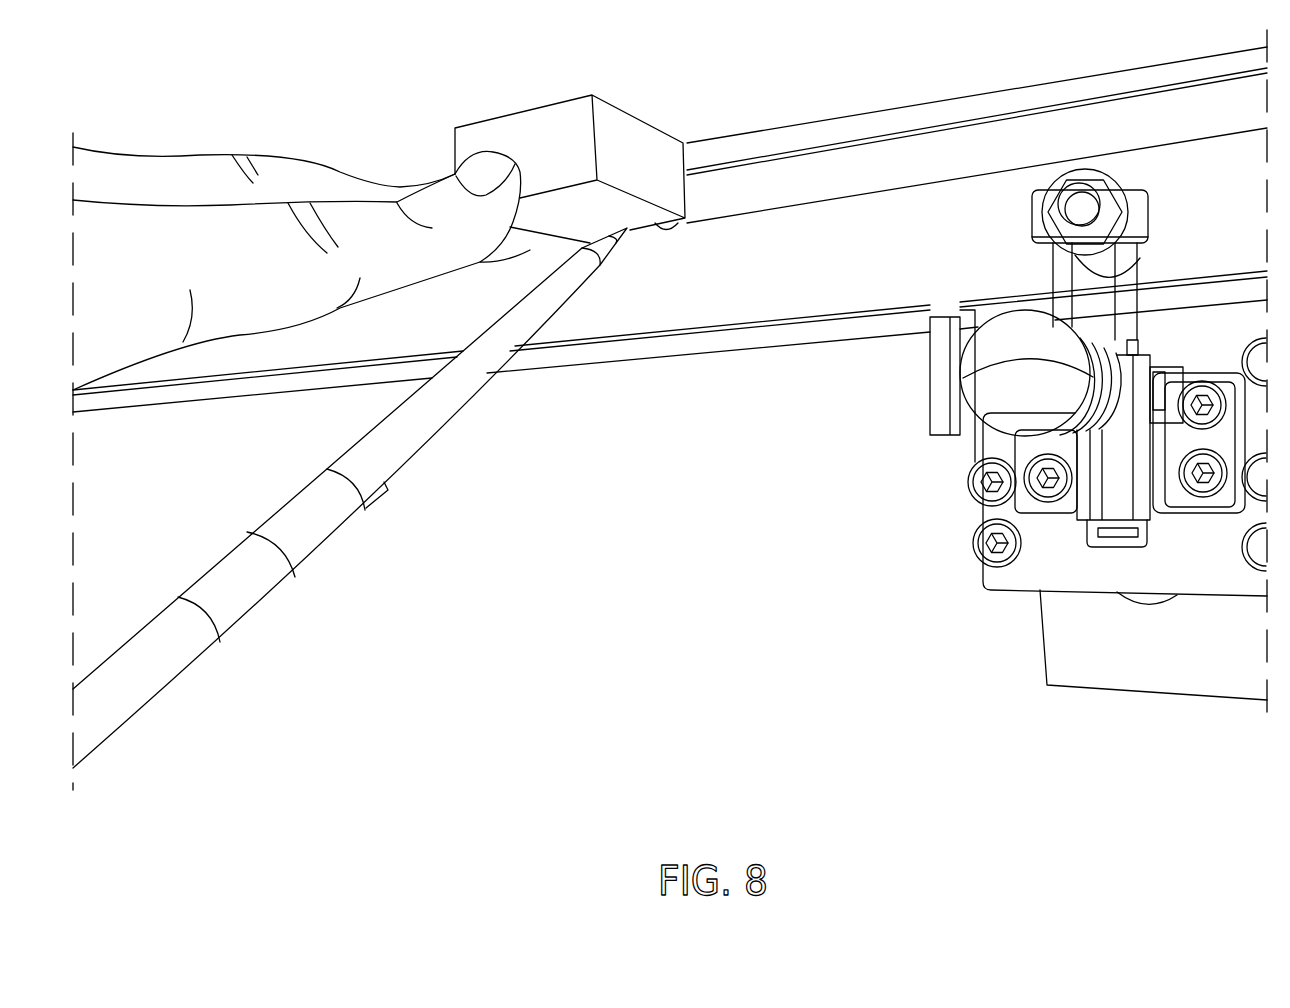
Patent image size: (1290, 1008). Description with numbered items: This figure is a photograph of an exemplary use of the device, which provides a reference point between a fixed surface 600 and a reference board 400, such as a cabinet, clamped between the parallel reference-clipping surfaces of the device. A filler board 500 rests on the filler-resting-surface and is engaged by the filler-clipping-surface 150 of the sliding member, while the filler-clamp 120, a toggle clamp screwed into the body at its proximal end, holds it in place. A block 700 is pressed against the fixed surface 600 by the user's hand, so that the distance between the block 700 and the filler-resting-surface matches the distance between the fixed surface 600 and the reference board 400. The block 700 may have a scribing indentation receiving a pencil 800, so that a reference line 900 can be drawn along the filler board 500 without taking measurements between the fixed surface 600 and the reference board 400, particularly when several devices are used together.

The fixed surface 600 is at (433, 52).
The block 700 is at (618, 147).
The filler board 500 is at (817, 187).
The reference line 900 is at (968, 175).
The reference board 400 is at (725, 330).
The pencil 800 is at (305, 529).
The filler-clamp 120 is at (1030, 445).
The filler-clipping-surface 150 is at (1128, 655).